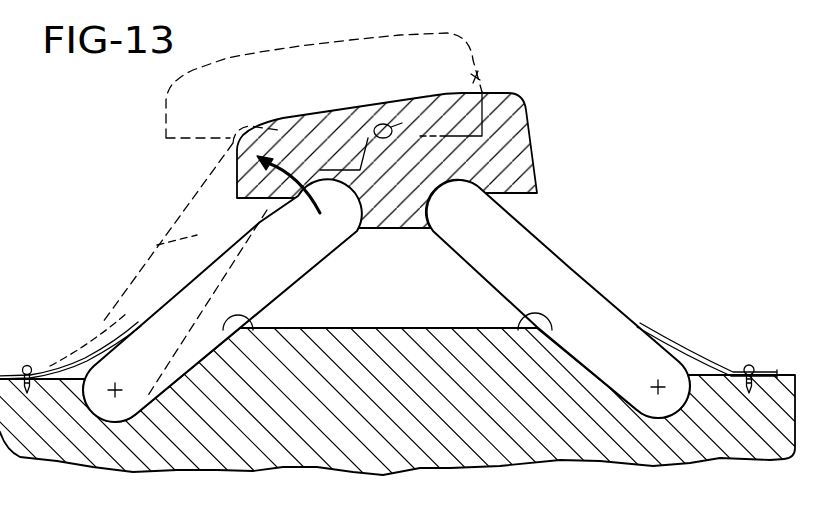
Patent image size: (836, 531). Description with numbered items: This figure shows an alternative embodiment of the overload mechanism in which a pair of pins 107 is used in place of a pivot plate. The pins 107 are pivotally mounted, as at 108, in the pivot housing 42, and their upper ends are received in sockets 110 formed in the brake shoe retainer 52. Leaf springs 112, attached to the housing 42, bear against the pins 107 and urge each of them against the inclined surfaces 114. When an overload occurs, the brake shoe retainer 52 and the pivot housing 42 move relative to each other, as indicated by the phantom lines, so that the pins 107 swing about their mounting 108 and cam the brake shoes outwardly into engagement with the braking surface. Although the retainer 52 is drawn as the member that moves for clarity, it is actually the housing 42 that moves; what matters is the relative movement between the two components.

The pivot housing 42 is at (357, 458).
The brake shoe retainer 52 is at (490, 100).
The pins 107 is at (183, 293).
The pivotal mounting 108 is at (115, 392).
The sockets 110 is at (368, 114).
The leaf springs 112 is at (66, 362).
The inclined surfaces 114 is at (257, 315).